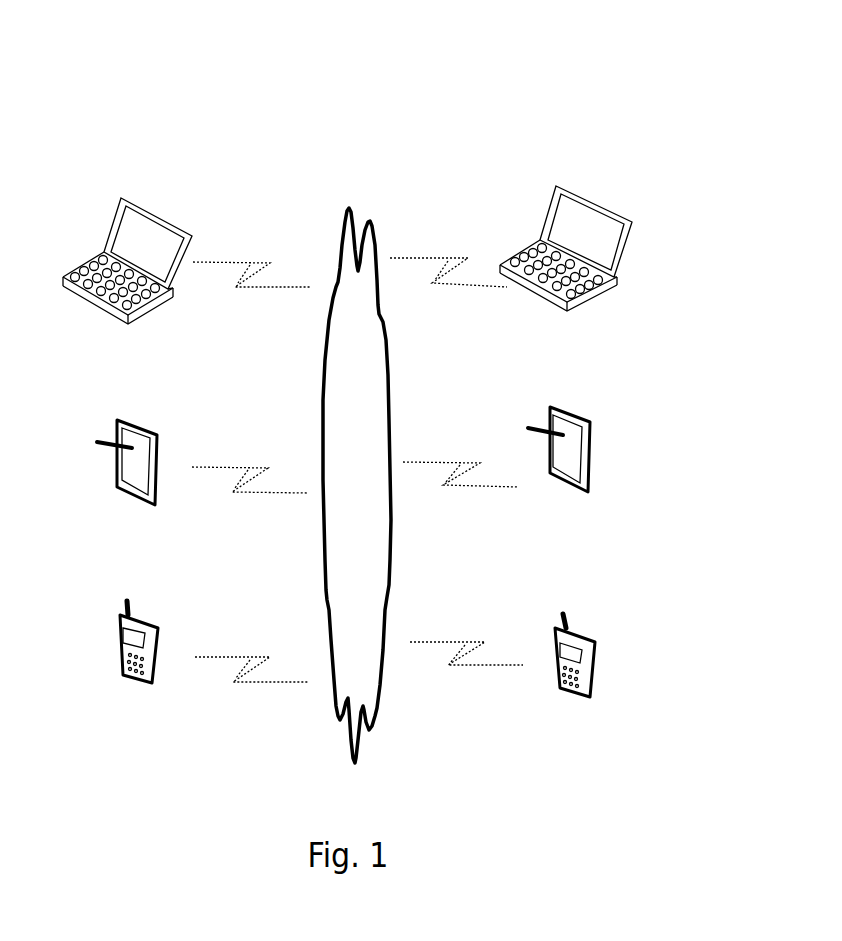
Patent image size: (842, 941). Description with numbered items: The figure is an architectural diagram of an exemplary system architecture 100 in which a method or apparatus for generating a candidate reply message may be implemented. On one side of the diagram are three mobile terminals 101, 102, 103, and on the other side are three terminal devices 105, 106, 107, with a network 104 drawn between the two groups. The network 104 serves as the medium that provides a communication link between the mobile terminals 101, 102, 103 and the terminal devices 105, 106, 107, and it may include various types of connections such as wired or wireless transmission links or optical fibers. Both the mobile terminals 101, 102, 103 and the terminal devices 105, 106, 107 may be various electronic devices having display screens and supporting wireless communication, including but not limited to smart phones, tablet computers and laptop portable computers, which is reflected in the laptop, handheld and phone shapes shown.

The system architecture 100 is at (528, 55).
The mobile terminal 101 is at (139, 660).
The mobile terminal 102 is at (127, 481).
The mobile terminal 103 is at (127, 279).
The network 104 is at (357, 485).
The terminal device 105 is at (566, 266).
The terminal device 106 is at (559, 467).
The terminal device 107 is at (575, 673).